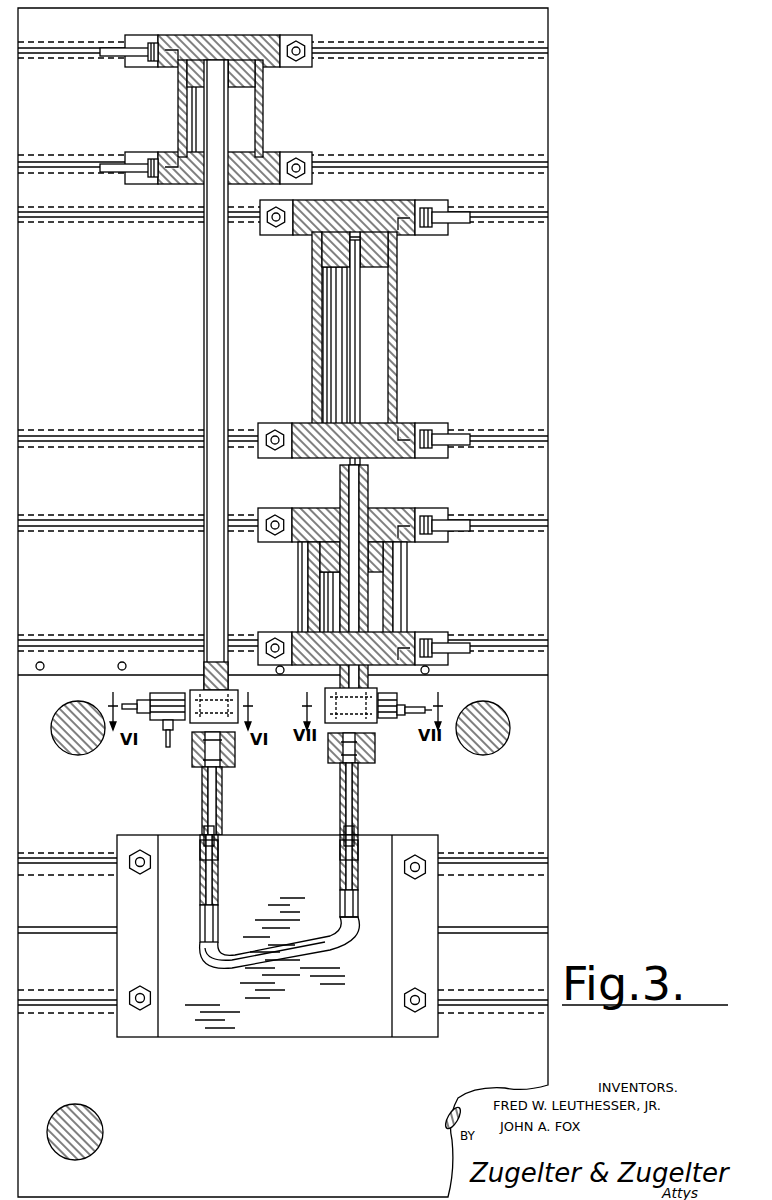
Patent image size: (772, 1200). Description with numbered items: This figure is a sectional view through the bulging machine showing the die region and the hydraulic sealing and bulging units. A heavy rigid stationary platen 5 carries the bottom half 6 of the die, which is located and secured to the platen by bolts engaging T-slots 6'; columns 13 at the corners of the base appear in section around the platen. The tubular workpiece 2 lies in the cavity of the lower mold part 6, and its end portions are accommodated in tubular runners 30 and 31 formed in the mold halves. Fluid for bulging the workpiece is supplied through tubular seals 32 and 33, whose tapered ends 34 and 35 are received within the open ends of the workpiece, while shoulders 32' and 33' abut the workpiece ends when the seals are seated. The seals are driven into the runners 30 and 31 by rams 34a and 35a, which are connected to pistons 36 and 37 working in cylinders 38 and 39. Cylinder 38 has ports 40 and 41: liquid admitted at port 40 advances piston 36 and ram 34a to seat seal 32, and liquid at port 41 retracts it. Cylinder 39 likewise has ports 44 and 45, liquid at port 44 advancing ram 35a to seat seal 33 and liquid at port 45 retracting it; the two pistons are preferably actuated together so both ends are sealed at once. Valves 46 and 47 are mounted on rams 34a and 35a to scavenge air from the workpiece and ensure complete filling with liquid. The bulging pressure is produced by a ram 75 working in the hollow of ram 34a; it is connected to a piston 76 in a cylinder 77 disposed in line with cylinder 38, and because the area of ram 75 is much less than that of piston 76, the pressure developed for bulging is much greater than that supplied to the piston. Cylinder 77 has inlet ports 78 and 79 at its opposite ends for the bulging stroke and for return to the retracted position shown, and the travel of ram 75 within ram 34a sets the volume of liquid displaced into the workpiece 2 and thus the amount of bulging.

The workpiece 2 is at (200, 927).
The stationary platen 5 is at (510, 812).
The bottom half of die 6 is at (277, 936).
The T-slots 6' is at (283, 948).
The columns 13 is at (62, 714).
The tubular runner 30 is at (340, 848).
The tubular runner 31 is at (200, 848).
The tubular seal 32 is at (368, 799).
The shoulder 32' is at (376, 825).
The tubular seal 33 is at (230, 801).
The shoulder 33' is at (235, 825).
The tapered end 34 is at (358, 850).
The ram 34a is at (340, 686).
The tapered end 35 is at (218, 850).
The ram 35a is at (206, 600).
The piston 36 is at (386, 556).
The piston 37 is at (186, 74).
The cylinder 38 is at (394, 598).
The cylinder 39 is at (263, 118).
The port 40 is at (385, 522).
The port 41 is at (400, 668).
The port 44 is at (182, 58).
The port 45 is at (182, 178).
The valve 46 is at (372, 734).
The valve 47 is at (238, 700).
The ram 75 is at (362, 382).
The piston 76 is at (386, 256).
The cylinder 77 is at (397, 325).
The inlet port 78 is at (392, 210).
The inlet port 79 is at (396, 438).